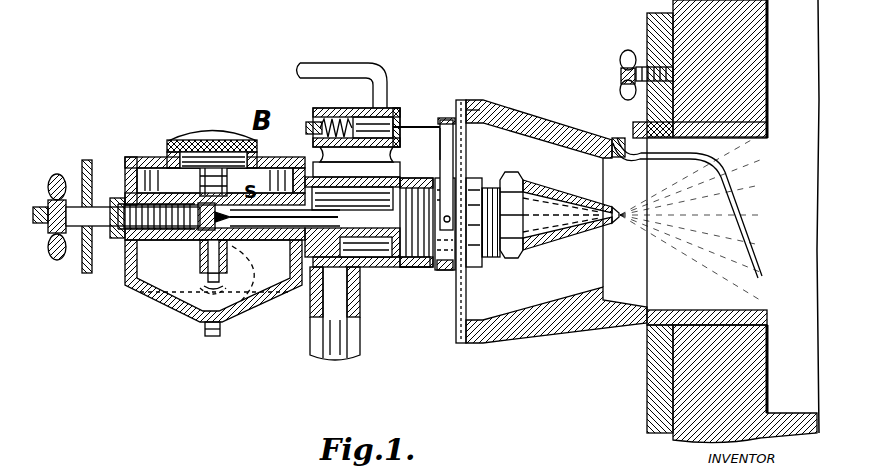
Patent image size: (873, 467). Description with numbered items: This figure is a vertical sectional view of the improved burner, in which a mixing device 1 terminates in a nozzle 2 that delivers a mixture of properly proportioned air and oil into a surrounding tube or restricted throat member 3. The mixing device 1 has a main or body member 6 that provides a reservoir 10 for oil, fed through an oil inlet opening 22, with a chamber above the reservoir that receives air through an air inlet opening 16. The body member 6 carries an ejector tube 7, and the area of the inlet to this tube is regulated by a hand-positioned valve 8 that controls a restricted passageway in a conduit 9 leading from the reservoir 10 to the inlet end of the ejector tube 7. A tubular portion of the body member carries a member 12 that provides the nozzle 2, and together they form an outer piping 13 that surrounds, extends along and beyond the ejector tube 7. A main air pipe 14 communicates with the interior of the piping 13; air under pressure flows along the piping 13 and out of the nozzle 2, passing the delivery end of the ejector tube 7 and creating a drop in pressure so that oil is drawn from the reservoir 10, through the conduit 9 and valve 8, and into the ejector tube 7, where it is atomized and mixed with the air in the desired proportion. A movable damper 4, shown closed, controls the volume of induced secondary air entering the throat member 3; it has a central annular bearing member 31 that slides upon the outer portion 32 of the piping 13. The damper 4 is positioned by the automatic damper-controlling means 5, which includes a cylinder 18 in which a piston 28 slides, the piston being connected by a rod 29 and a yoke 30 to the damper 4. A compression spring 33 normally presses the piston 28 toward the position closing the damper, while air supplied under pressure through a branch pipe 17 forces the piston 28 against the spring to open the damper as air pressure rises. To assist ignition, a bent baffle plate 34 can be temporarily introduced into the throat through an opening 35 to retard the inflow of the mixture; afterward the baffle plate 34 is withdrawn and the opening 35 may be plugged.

The mixing device 1 is at (201, 100).
The nozzle 2 is at (608, 212).
The restricted throat member 3 is at (560, 139).
The damper 4 is at (458, 336).
The damper-controlling means 5 is at (376, 102).
The body member 6 is at (308, 166).
The ejector tube 7 is at (387, 270).
The hand-positioned valve 8 is at (196, 252).
The conduit 9 is at (238, 250).
The reservoir 10 is at (213, 288).
The nozzle member 12 is at (491, 185).
The outer piping 13 is at (406, 176).
The main air pipe 14 is at (357, 348).
The air inlet opening 16 is at (178, 167).
The branch pipe 17 is at (364, 63).
The cylinder 18 is at (399, 106).
The oil inlet opening 22 is at (211, 283).
The piston 28 is at (356, 114).
The rod 29 is at (430, 127).
The yoke 30 is at (467, 130).
The central annular bearing member 31 is at (445, 272).
The outer portion of piping 32 is at (416, 262).
The compression spring 33 is at (313, 120).
The bent baffle plate 34 is at (713, 157).
The opening 35 is at (621, 141).